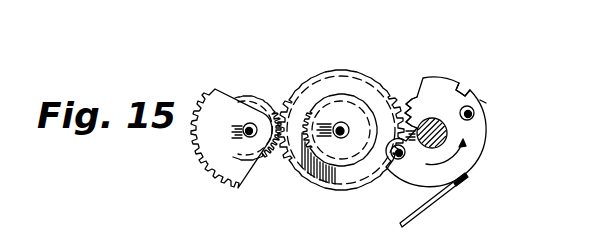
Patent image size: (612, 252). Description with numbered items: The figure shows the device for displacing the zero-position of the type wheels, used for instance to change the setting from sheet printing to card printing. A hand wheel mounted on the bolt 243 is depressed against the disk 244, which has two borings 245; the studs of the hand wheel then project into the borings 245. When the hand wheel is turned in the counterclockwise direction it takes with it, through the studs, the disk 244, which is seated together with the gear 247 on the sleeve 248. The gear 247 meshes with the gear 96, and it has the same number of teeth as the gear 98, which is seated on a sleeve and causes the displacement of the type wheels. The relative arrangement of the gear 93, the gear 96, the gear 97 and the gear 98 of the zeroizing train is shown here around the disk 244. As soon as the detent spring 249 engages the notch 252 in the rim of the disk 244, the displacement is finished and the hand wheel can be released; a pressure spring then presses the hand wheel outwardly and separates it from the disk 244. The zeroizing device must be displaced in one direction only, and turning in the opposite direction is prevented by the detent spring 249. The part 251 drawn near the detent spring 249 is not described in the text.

The gear 93 is at (232, 170).
The gear 96 is at (328, 88).
The gear 97 is at (340, 175).
The gear 98 is at (252, 100).
The bolt 243 is at (486, 103).
The disk 244 is at (478, 145).
The borings 245 is at (478, 104).
The gear 247 is at (410, 100).
The sleeve 248 is at (430, 138).
The detent spring 249 is at (442, 194).
The pivot of lever 251 is at (465, 185).
The notch 252 is at (466, 90).